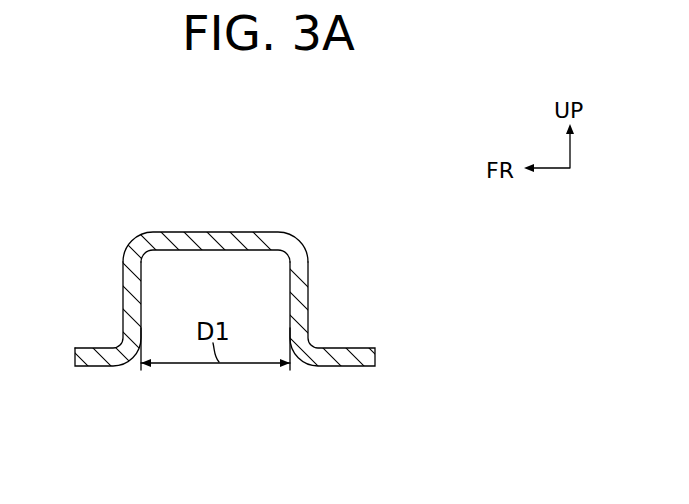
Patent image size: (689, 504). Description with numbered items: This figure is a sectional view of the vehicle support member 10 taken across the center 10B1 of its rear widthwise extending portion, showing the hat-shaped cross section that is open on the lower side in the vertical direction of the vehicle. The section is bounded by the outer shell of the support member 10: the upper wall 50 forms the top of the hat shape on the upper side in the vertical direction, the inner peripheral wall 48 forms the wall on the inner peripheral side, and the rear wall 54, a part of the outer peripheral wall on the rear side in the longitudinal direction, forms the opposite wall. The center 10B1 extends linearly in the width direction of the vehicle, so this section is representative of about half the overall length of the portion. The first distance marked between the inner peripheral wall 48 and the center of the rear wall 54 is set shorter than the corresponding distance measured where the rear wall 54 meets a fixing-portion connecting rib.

The center of the widthwise extending portion 10B1 is at (202, 268).
The support member 10 is at (200, 270).
The upper wall 50 is at (178, 232).
The inner peripheral wall 48 is at (122, 283).
The rear wall 54 is at (303, 298).